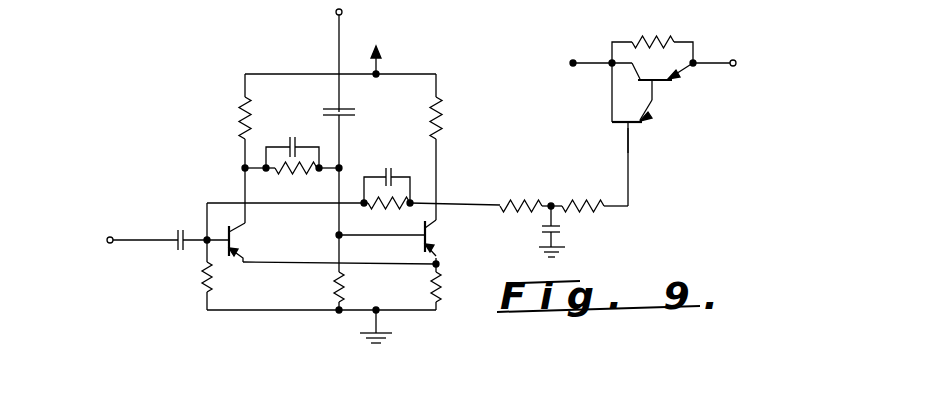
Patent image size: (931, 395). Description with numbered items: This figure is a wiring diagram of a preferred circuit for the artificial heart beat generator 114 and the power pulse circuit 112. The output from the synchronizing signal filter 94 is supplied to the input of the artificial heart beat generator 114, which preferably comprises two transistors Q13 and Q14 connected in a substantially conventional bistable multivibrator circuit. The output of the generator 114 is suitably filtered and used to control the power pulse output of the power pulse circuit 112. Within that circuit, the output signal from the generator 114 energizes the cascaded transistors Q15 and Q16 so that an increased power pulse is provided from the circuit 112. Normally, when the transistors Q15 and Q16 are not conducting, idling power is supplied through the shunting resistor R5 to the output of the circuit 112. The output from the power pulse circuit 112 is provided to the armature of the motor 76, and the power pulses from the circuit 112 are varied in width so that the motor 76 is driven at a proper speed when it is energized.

The artificial heart beat generator 114 is at (408, 202).
The power pulse circuit 112 is at (654, 153).
The synchronizing signal filter 94 is at (77, 274).
The motor 76 is at (748, 96).
The shunting resistor R5 is at (640, 35).
The transistor Q13 is at (256, 242).
The transistor Q14 is at (450, 238).
The transistor Q15 is at (646, 108).
The transistor Q16 is at (667, 82).